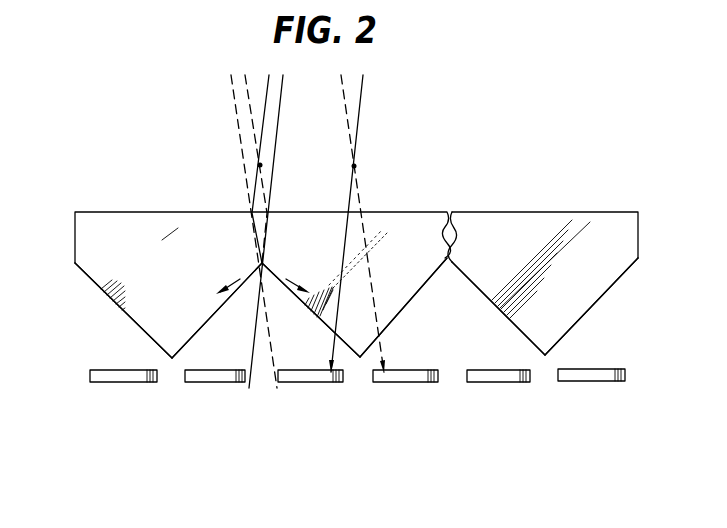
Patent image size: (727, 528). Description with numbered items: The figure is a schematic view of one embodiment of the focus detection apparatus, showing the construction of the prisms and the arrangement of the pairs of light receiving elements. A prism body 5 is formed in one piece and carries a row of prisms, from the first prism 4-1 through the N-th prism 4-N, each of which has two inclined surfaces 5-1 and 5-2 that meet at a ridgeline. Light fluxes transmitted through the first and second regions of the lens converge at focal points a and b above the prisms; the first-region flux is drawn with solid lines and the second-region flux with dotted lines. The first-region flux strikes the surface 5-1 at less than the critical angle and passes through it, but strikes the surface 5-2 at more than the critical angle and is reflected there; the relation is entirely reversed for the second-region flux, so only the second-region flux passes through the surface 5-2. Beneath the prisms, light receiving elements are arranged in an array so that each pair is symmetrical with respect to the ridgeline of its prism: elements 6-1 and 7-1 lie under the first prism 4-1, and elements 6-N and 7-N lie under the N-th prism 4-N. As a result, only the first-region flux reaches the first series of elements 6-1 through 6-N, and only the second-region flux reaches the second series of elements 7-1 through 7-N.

The prism body 5 is at (143, 199).
The first inclined surface 5-1 is at (123, 313).
The second inclined surface 5-2 is at (213, 314).
The N-th prism 4-N is at (155, 333).
The first prism 4-1 is at (560, 313).
The N-th light receiving element of first series 6-N is at (125, 385).
The N-th light receiving element of second series 7-N is at (212, 385).
The first light receiving element of first series 6-1 is at (503, 385).
The first light receiving element of second series 7-1 is at (590, 383).
The focal point a is at (354, 166).
The focal point b is at (260, 165).